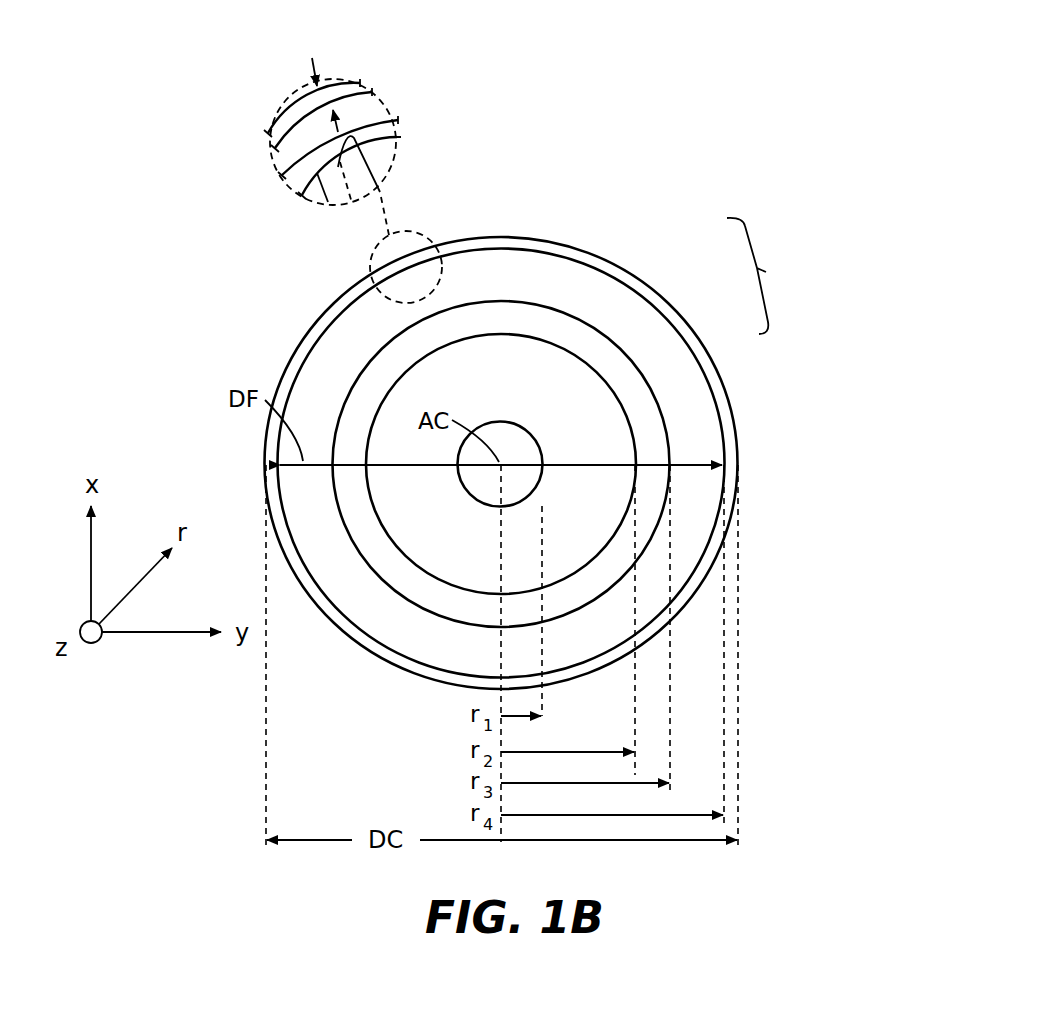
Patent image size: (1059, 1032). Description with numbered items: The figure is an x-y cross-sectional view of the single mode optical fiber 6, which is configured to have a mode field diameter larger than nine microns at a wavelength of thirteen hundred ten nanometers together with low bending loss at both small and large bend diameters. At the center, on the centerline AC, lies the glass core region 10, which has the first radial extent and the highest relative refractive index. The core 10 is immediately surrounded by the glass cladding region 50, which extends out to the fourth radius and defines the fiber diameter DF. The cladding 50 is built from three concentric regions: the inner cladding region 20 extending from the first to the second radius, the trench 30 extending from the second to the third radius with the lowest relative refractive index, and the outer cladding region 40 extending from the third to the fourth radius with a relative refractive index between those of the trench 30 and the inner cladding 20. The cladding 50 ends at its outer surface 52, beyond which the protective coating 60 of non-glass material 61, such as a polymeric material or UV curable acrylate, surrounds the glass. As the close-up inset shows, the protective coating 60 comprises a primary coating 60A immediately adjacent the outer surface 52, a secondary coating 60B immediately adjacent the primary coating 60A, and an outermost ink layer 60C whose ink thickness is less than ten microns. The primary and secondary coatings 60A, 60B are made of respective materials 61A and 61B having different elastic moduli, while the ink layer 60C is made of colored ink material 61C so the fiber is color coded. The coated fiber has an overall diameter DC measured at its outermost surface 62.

The optical fiber 6 is at (238, 303).
The glass core region 10 is at (530, 458).
The inner cladding region 20 is at (583, 403).
The trench 30 is at (622, 372).
The outer cladding region 40 is at (613, 322).
The glass cladding region 50 is at (766, 276).
The outer surface 52 is at (710, 382).
The protective coating 60 is at (636, 262).
The primary coating 60A is at (397, 125).
The secondary coating 60B is at (390, 107).
The ink layer 60C is at (363, 82).
The non-glass material 61 is at (565, 243).
The primary coating material 61A is at (287, 185).
The secondary coating material 61B is at (270, 167).
The ink material 61C is at (270, 140).
The outermost surface 62 is at (516, 240).